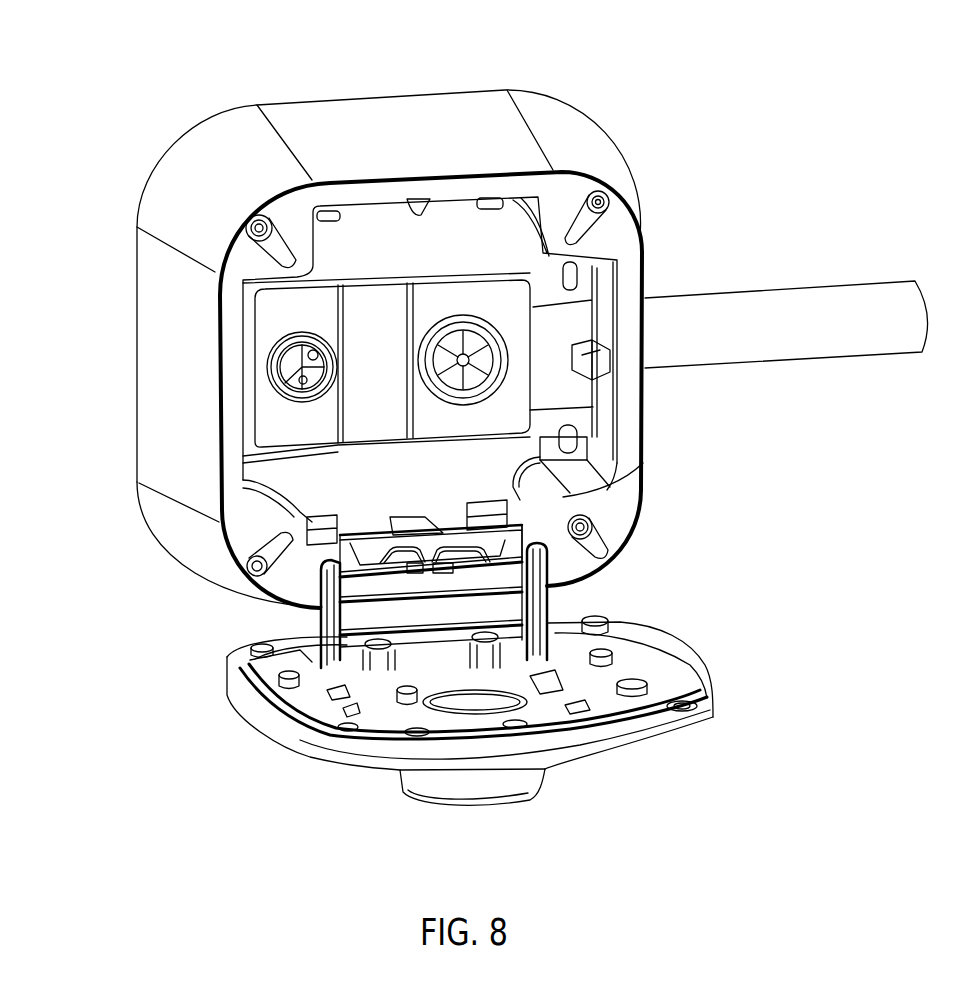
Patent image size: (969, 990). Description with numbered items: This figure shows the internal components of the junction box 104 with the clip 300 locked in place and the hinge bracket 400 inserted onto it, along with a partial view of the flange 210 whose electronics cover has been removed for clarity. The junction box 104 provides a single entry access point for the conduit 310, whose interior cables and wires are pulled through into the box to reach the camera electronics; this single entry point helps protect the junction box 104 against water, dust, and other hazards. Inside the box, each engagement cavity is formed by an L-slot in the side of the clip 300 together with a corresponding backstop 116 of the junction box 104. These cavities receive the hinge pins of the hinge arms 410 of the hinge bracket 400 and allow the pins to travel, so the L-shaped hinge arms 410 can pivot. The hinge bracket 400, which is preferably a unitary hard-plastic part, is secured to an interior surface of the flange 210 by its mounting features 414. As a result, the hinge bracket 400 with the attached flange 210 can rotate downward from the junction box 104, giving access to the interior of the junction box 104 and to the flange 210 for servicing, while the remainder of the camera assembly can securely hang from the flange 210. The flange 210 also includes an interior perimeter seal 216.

The junction box 104 is at (383, 107).
The clip 300 is at (412, 513).
The conduit 310 is at (762, 298).
The backstop 116 is at (676, 466).
The hinge bracket 400 is at (278, 621).
The hinge arm 410 is at (547, 608).
The flange 210 is at (710, 703).
The interior perimeter seal 216 is at (270, 713).
The mounting feature 414 is at (530, 818).